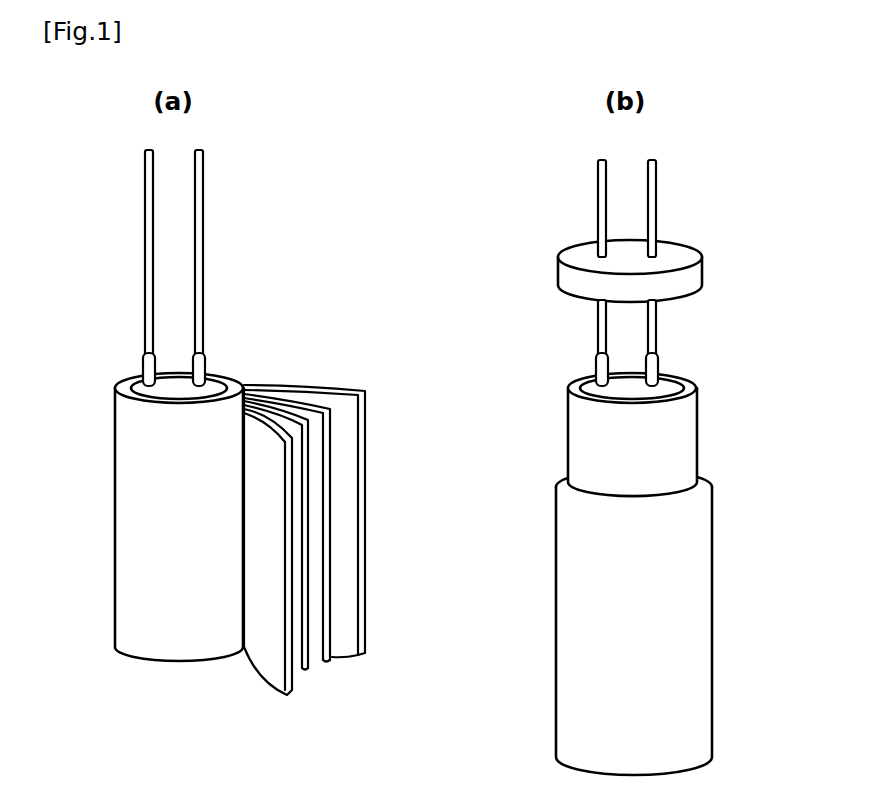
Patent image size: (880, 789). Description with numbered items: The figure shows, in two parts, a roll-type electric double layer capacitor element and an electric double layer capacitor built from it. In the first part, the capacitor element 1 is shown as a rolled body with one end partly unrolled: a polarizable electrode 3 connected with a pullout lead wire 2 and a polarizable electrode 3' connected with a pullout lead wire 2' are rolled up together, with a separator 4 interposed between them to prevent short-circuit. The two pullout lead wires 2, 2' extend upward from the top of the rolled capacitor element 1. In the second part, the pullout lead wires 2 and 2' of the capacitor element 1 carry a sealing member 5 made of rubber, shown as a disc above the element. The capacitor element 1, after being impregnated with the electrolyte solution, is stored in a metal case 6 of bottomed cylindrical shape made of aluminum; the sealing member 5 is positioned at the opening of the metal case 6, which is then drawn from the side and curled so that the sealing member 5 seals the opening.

The capacitor element 1 is at (190, 637).
The pullout lead wire 2 is at (342, 268).
The pullout lead wire 2' is at (462, 268).
The polarizable electrode 3 is at (327, 570).
The polarizable electrode 3' is at (268, 572).
The separator 4 is at (316, 637).
The sealing member 5 is at (692, 277).
The metal case 6 is at (678, 663).